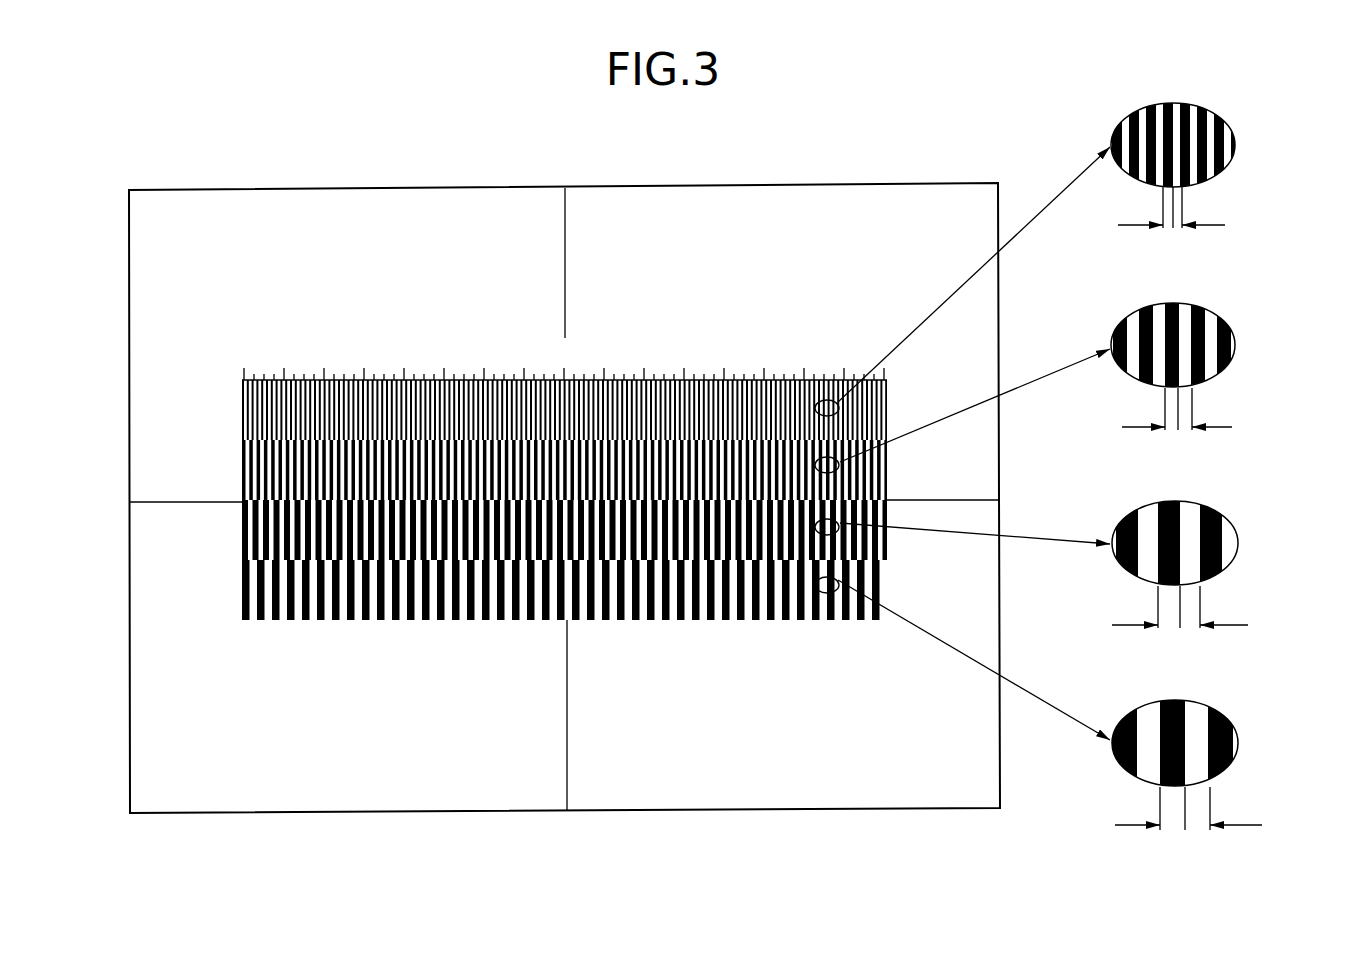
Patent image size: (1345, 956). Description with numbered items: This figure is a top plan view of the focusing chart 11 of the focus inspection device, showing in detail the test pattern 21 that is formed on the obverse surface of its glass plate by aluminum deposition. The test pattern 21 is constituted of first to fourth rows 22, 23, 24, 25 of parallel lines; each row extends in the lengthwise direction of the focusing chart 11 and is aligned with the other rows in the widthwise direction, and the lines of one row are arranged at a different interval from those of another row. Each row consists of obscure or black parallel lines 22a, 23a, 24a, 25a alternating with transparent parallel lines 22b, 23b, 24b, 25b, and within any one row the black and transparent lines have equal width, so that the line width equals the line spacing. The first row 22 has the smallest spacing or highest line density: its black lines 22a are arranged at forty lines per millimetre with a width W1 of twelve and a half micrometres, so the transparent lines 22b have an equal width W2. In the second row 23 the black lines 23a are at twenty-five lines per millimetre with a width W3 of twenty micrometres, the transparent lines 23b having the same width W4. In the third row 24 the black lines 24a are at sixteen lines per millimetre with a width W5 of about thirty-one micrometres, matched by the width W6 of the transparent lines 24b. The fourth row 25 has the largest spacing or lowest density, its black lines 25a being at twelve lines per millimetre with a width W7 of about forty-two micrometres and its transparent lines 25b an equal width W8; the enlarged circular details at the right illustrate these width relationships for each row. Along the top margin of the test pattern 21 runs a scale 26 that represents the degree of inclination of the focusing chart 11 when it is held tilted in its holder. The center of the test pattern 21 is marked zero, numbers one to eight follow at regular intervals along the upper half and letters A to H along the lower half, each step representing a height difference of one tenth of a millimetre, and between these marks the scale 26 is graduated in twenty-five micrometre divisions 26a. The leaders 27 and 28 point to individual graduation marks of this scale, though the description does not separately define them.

The focusing chart 11 is at (386, 631).
The test pattern 21 is at (195, 382).
The first row 22 is at (672, 247).
The black lines of first row 22a is at (1118, 124).
The transparent lines of first row 22b is at (1175, 108).
The second row 23 is at (672, 376).
The black lines of second row 23a is at (1118, 324).
The transparent lines of second row 23b is at (1180, 308).
The third row 24 is at (678, 553).
The black lines of third row 24a is at (1128, 512).
The transparent lines of third row 24b is at (1226, 525).
The fourth row 25 is at (681, 703).
The black lines of fourth row 25a is at (1132, 716).
The transparent lines of fourth row 25b is at (1200, 716).
The scale 26 is at (653, 327).
The divisions 26a is at (623, 378).
The scale mark 27 is at (723, 372).
The scale mark 28 is at (361, 372).
The width of black lines of first row W1 is at (1128, 208).
The width of transparent lines of first row W2 is at (1220, 208).
The width of black lines of second row W3 is at (1132, 410).
The width of transparent lines of second row W4 is at (1230, 410).
The width of black lines of third row W5 is at (1132, 608).
The width of transparent lines of third row W6 is at (1230, 608).
The width of black lines of fourth row W7 is at (1135, 808).
The width of transparent lines of fourth row W8 is at (1237, 808).